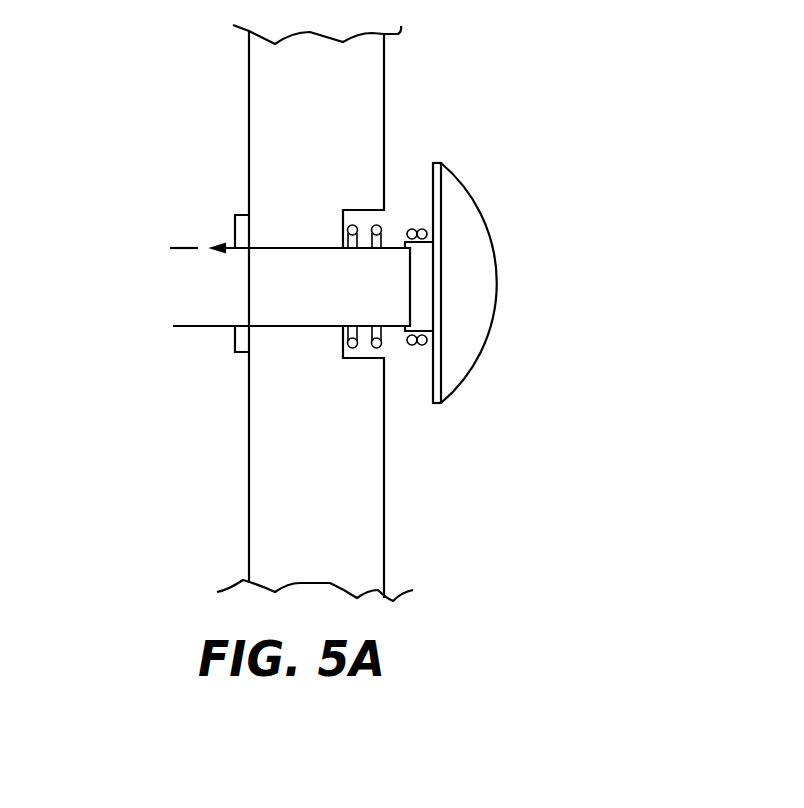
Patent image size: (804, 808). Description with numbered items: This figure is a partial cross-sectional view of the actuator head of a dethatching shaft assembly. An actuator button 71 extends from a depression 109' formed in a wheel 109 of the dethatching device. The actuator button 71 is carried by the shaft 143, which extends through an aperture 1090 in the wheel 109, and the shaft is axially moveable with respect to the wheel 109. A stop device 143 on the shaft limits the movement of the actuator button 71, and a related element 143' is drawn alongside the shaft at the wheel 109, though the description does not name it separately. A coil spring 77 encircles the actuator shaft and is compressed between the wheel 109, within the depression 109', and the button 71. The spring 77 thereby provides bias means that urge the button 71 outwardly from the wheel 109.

The wheel 109 is at (360, 313).
The depression 109' is at (436, 233).
The aperture 1090 is at (298, 248).
The shaft 143 is at (144, 331).
The shaft collar 143' is at (202, 326).
The actuator button 71 is at (487, 264).
The coil spring 77 is at (386, 338).